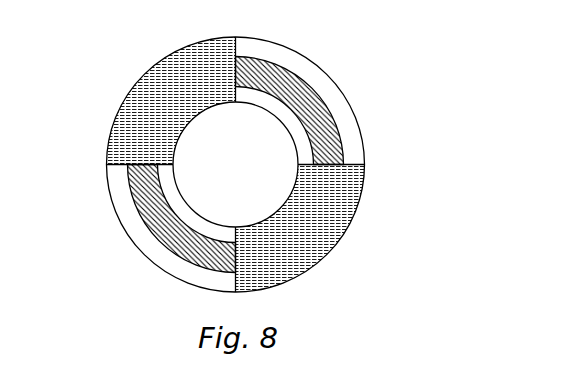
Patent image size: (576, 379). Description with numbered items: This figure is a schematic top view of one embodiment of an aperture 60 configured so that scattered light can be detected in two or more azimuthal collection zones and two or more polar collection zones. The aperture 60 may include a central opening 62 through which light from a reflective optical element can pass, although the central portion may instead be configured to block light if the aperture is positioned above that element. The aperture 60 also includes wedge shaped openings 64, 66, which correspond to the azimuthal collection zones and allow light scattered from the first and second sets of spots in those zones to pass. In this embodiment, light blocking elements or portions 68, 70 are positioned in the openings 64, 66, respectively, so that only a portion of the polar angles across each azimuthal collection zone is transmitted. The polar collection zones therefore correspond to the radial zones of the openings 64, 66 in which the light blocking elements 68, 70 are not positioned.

The aperture 60 is at (93, 75).
The central opening 62 is at (247, 170).
The opening 64 is at (343, 116).
The opening 66 is at (175, 267).
The light blocking element or portion 68 is at (300, 97).
The light blocking element or portion 70 is at (166, 230).